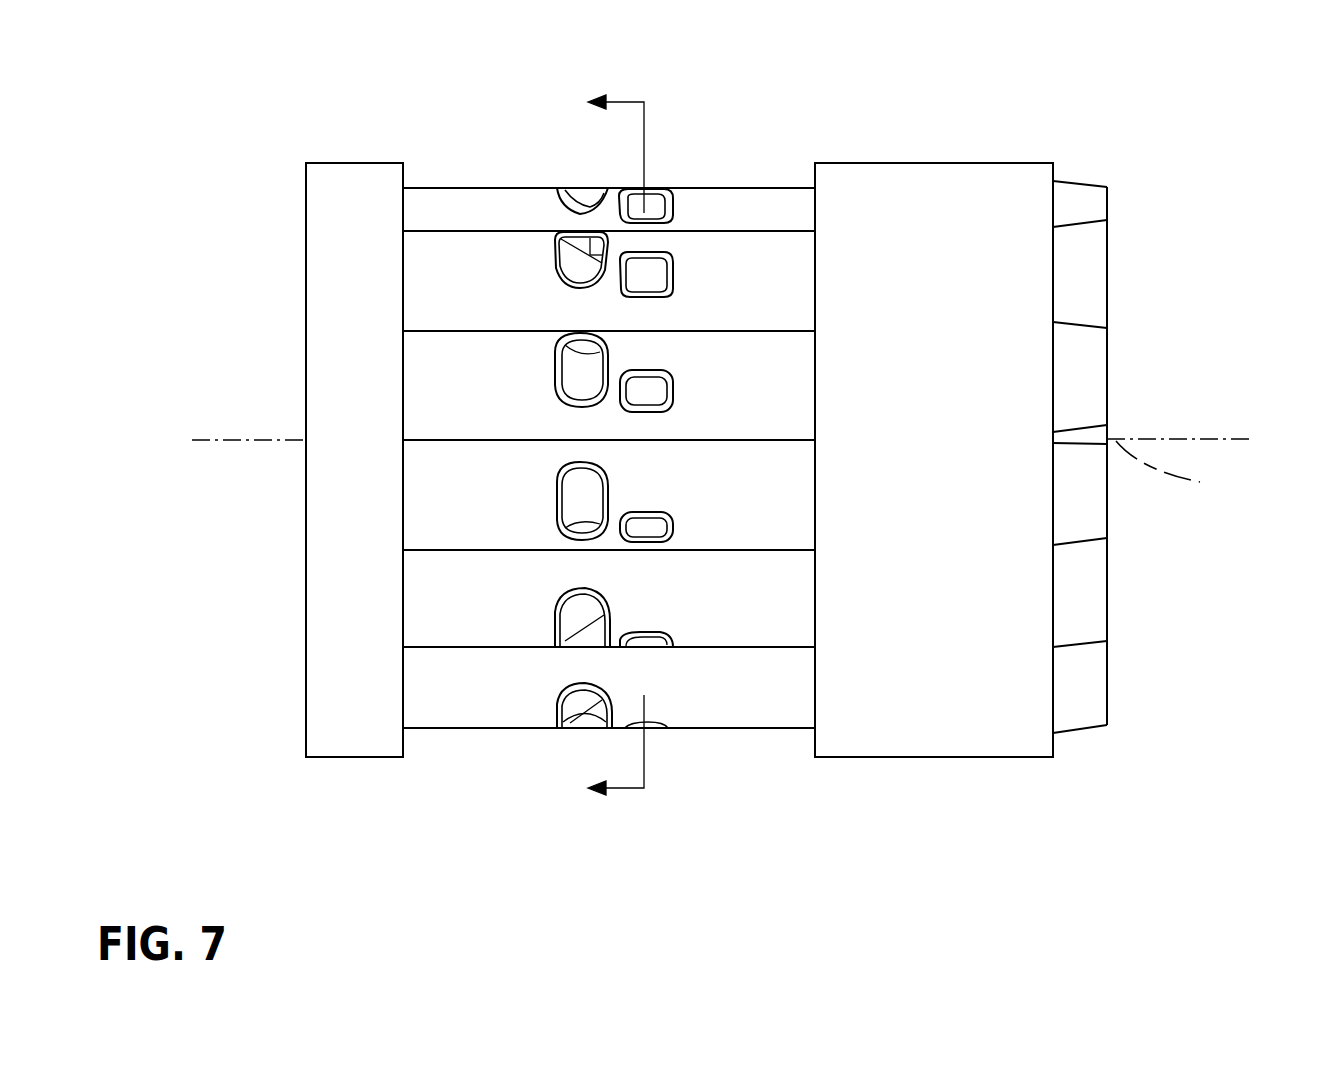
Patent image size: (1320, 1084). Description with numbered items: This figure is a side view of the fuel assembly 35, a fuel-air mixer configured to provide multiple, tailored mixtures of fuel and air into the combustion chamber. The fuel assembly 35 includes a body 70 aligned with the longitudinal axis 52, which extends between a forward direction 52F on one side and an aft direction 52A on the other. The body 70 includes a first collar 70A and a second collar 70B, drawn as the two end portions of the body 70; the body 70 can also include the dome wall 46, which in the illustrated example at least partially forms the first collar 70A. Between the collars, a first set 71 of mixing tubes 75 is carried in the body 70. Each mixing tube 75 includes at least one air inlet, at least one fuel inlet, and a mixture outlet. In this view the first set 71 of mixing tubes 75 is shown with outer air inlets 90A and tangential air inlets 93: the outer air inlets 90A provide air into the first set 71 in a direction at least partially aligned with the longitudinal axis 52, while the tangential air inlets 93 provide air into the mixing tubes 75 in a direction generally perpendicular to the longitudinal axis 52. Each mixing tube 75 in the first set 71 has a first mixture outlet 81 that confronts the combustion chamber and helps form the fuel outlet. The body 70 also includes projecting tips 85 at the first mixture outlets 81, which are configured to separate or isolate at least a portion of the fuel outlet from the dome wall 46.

The fuel assembly 35 is at (292, 115).
The body 70 is at (296, 187).
The second collar 70B is at (350, 181).
The first collar 70A is at (1003, 178).
The mixing tubes 75 is at (473, 720).
The first set of mixing tubes 71 is at (782, 738).
The outer air inlets 90A is at (584, 196).
The tangential air inlets 93 is at (660, 203).
The first mixture outlets 81 is at (1118, 349).
The projecting tip 85 is at (1083, 693).
The dome wall 46 is at (1055, 750).
The forward direction 52F is at (224, 441).
The aft direction 52A is at (1203, 441).
The longitudinal axis 52 is at (1175, 467).